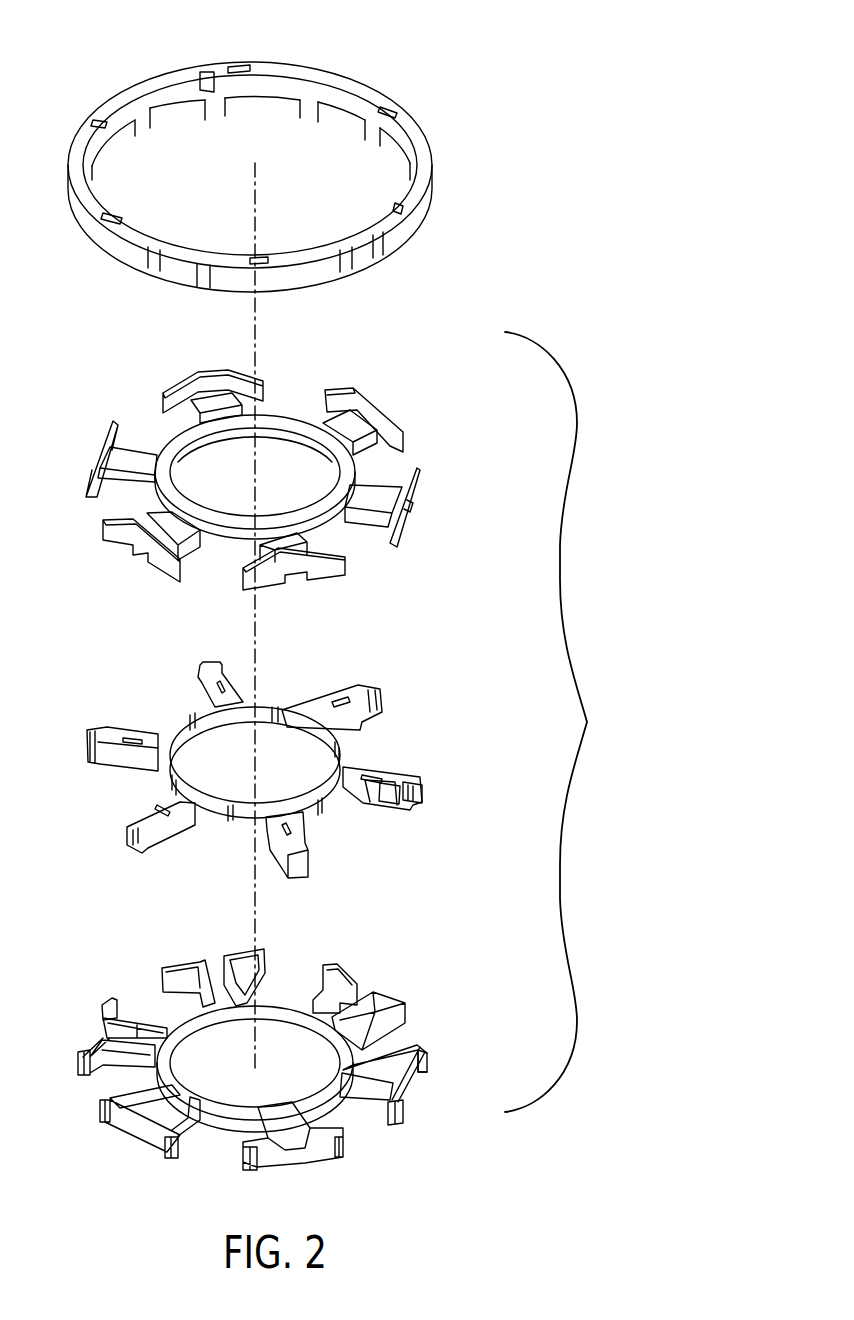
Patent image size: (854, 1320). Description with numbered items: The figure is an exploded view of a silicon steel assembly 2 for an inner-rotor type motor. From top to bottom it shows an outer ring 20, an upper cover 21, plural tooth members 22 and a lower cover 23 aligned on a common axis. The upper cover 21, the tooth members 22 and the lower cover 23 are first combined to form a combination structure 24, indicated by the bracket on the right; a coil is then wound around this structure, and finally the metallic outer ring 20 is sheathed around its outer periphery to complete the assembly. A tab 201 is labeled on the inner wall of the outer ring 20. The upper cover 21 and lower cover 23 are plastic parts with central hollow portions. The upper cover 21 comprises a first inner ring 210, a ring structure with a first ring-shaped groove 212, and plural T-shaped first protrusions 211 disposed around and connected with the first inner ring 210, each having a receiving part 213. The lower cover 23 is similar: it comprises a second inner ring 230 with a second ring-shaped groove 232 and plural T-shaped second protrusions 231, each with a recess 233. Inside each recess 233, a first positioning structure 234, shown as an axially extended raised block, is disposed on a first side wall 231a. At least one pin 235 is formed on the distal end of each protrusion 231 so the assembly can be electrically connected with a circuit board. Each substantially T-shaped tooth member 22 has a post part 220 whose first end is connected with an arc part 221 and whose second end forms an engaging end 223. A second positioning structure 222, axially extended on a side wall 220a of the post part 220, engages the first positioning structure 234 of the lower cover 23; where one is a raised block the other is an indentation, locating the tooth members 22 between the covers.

The silicon steel assembly 2 is at (631, 42).
The outer ring 20 is at (418, 116).
The tab of ring 201 is at (206, 72).
The upper cover 21 is at (303, 459).
The first inner ring 210 is at (303, 424).
The first protrusions 211 is at (350, 428).
The first ring-shaped groove 212 is at (337, 468).
The receiving parts 213 is at (410, 517).
The tooth members 22 is at (296, 760).
The post part 220 is at (388, 777).
The side wall 220a is at (385, 798).
The arc part 221 is at (347, 745).
The second positioning structure 222 is at (368, 803).
The engaging end 223 is at (422, 783).
The lower cover 23 is at (293, 1039).
The second inner ring 230 is at (295, 995).
The second protrusions 231 is at (360, 1013).
The first side wall 231a is at (393, 1087).
The second ring-shaped groove 232 is at (268, 1005).
The recesses 233 is at (338, 1005).
The first positioning structure 234 is at (368, 1072).
The pin 235 is at (402, 1117).
The combination structure 24 is at (567, 722).